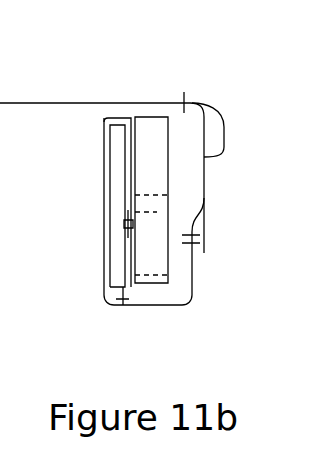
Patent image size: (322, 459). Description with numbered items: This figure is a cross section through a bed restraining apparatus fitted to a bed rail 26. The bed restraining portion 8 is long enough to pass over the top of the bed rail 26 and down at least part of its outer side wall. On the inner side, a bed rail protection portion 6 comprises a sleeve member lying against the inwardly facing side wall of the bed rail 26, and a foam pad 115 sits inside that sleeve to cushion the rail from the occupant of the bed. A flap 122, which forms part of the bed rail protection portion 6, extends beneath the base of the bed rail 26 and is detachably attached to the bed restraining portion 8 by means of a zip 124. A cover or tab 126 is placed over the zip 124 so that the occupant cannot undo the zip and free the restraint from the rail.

The bed restraining portion 8 is at (55, 103).
The bed rail 26 is at (153, 167).
The bed rail protection portion 6 is at (140, 216).
The foam pad 115 is at (118, 173).
The cover or tab 126 is at (205, 238).
The zip 124 is at (193, 244).
The flap 122 is at (173, 306).